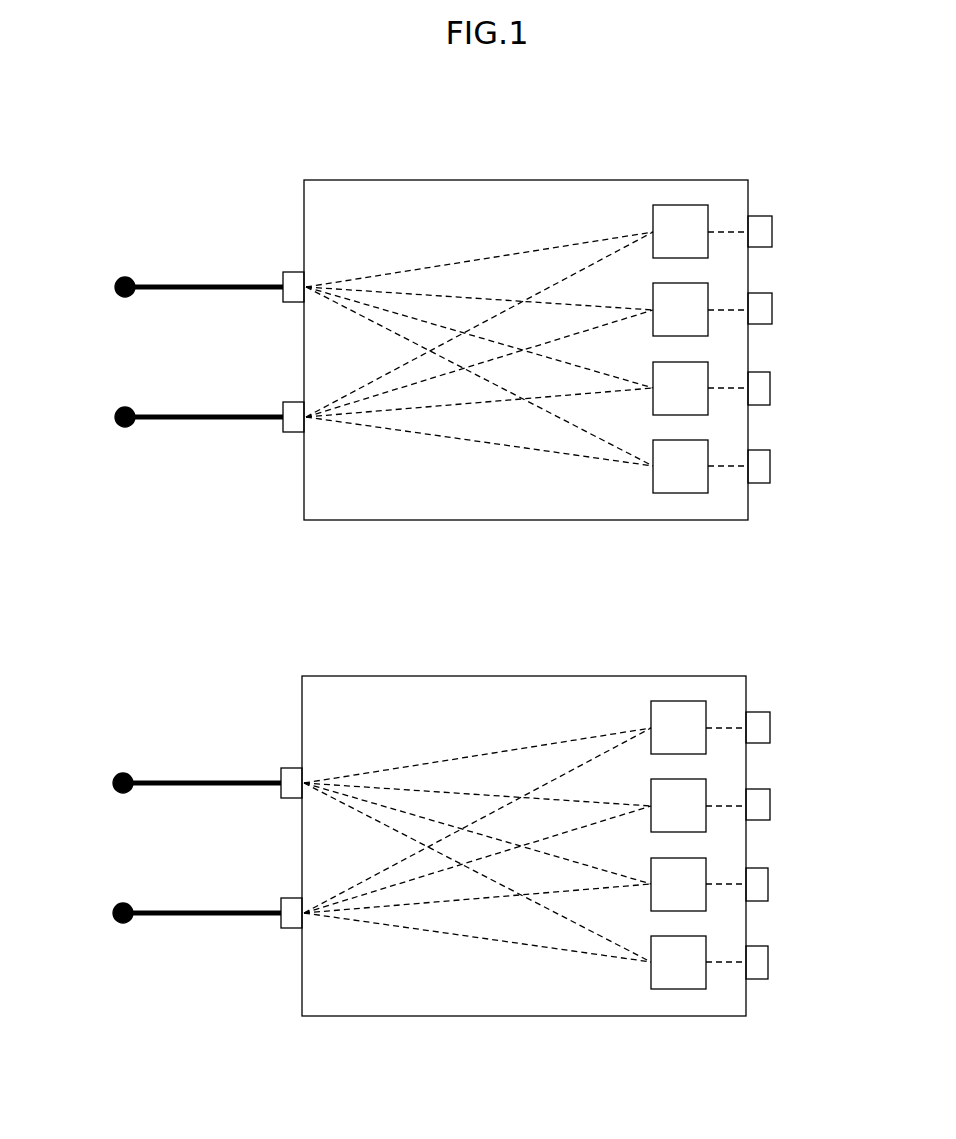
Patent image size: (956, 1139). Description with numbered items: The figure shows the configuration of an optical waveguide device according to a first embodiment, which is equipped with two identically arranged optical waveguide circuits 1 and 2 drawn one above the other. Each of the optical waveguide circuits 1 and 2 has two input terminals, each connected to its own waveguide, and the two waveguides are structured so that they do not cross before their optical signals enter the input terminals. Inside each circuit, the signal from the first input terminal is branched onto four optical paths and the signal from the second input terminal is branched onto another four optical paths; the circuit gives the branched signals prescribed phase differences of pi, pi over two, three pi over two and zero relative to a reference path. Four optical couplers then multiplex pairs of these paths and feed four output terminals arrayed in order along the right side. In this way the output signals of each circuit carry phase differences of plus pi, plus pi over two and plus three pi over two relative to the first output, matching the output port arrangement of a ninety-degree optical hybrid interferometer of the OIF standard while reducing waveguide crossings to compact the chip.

The optical waveguide circuit 1 is at (703, 178).
The optical waveguide circuit 2 is at (524, 800).